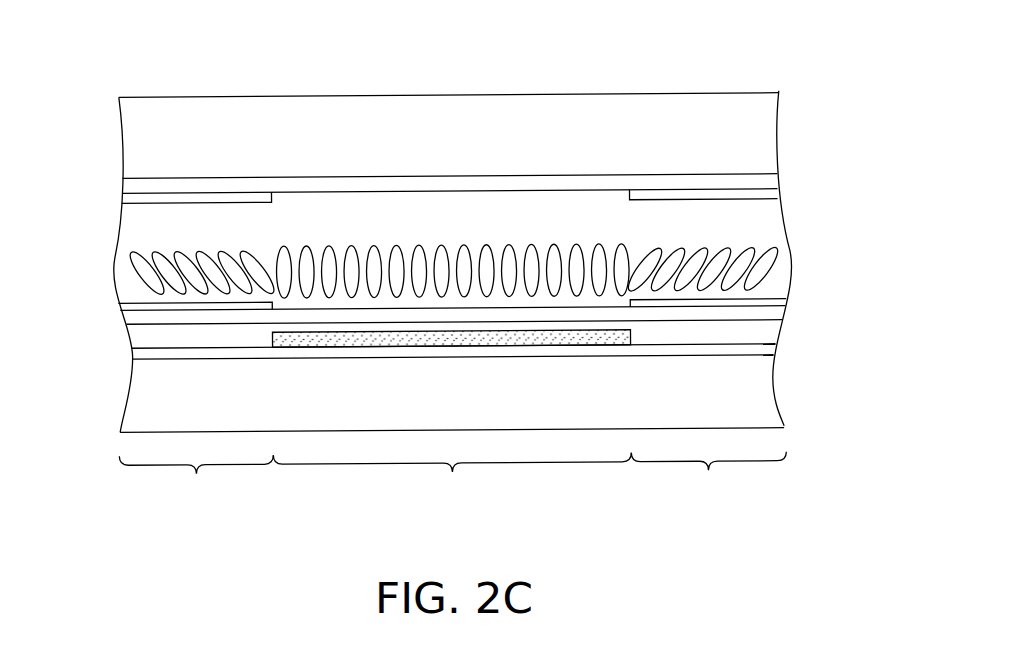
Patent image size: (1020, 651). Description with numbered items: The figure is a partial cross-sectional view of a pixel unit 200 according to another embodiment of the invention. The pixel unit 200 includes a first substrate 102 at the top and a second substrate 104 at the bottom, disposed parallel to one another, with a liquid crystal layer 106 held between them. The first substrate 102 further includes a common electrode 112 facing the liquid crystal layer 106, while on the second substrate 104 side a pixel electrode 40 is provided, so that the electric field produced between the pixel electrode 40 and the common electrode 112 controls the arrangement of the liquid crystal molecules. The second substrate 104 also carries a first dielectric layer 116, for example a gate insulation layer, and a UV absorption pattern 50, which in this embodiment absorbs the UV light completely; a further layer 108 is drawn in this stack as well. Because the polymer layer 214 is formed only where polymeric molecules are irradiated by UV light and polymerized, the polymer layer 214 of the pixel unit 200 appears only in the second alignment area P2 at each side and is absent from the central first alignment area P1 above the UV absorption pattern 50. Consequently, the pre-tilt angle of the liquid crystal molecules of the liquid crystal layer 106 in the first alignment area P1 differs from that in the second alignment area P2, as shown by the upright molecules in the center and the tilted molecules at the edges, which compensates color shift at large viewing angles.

The first substrate 102 is at (713, 88).
The common electrode 112 is at (132, 183).
The polymer layer 214 is at (132, 198).
The liquid crystal layer 106 is at (140, 229).
The pixel electrode 40 is at (134, 320).
The pixel electrode layer 108 is at (140, 337).
The UV absorption pattern 50 is at (272, 338).
The first dielectric layer 116 is at (143, 352).
The second substrate 104 is at (757, 434).
The pixel unit 200 is at (456, 286).
The first alignment area P1 is at (452, 486).
The second alignment area P2 is at (452, 487).